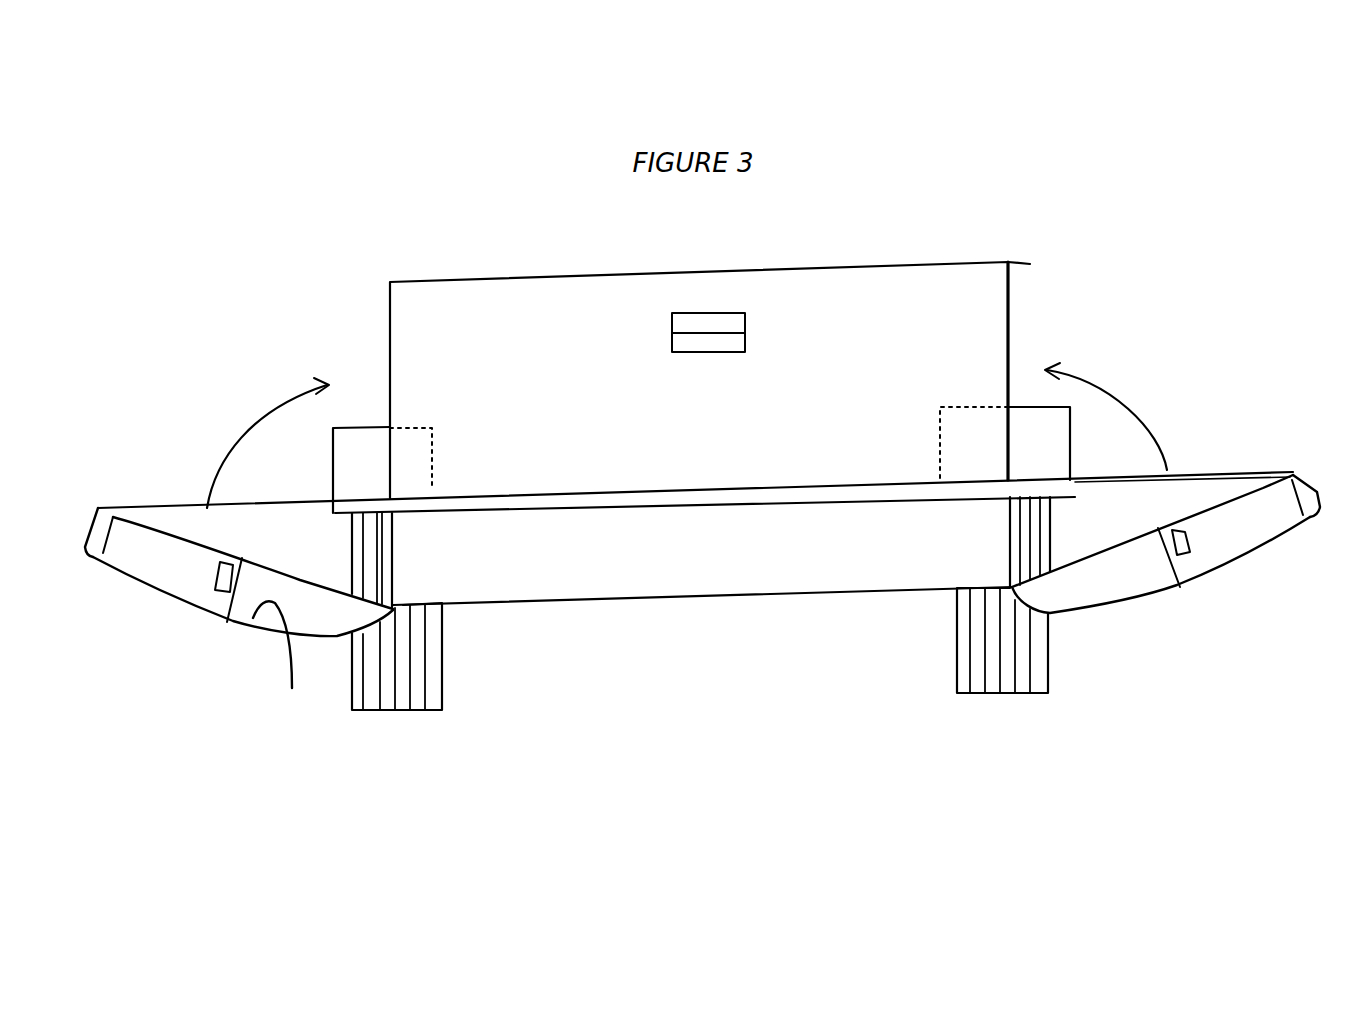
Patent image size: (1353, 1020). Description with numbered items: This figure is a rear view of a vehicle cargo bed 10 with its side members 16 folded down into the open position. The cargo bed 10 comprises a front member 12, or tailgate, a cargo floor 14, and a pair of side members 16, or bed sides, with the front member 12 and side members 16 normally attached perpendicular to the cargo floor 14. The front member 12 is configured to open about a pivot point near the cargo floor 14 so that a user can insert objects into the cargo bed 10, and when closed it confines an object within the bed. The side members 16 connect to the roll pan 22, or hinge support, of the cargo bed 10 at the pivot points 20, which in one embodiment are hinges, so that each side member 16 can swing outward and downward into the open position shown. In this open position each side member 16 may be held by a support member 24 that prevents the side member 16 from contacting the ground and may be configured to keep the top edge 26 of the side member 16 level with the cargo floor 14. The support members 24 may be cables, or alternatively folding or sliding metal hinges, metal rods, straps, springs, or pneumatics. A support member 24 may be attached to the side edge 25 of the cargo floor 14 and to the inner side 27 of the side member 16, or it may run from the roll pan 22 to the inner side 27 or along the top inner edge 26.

The cargo bed 10 is at (512, 188).
The front member 12 is at (822, 290).
The cargo floor 14 is at (525, 500).
The side member 16 is at (233, 620).
The pivot point 20 is at (1013, 587).
The roll pan 22 is at (555, 602).
The support member 24 is at (158, 505).
The side edge 25 is at (337, 508).
The top edge 26 is at (1300, 472).
The inner side 27 is at (283, 664).